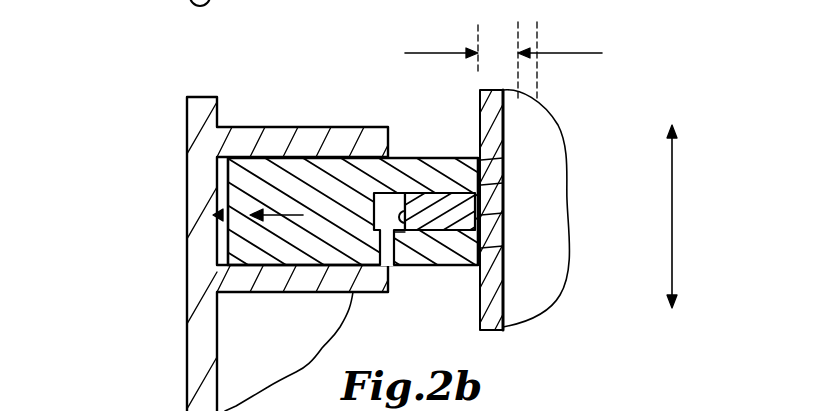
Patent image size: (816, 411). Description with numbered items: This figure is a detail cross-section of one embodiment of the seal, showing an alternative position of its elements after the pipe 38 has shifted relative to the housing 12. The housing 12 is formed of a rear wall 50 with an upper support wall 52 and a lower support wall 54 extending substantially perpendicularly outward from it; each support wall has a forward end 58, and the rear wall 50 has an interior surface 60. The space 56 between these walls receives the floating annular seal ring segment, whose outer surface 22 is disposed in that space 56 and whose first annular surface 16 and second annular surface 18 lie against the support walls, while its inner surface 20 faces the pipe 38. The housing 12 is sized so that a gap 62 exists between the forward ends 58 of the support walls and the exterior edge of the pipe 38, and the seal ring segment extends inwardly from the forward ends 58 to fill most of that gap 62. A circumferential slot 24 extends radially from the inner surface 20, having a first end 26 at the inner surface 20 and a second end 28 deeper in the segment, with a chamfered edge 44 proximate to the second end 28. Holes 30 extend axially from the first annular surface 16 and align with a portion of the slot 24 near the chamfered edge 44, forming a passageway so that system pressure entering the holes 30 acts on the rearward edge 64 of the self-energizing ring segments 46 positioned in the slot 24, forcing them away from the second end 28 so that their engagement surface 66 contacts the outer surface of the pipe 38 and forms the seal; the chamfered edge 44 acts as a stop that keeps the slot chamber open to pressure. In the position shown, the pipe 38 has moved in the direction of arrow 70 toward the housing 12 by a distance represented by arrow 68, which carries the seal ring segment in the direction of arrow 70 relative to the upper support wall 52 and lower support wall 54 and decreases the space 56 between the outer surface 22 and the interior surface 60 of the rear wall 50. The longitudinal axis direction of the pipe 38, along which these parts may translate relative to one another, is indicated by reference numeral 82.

The housing 12 is at (180, 295).
The first annular surface 16 is at (420, 268).
The second annular surface 18 is at (455, 158).
The inner surface 20 is at (483, 248).
The outer surface 22 is at (220, 182).
The circumferential slot 24 is at (392, 192).
The first end 26 is at (483, 186).
The second end 28 is at (357, 190).
The holes 30 is at (412, 268).
The pipe 38 is at (510, 268).
The chamfered edge 44 is at (394, 193).
The self-energizing ring segments 46 is at (503, 160).
The rear wall 50 is at (198, 194).
The upper support wall 52 is at (292, 130).
The lower support wall 54 is at (270, 282).
The space 56 is at (221, 162).
The forward end 58 is at (388, 150).
The interior surface 60 is at (222, 232).
The gap 62 is at (442, 134).
The rearward edge 64 is at (423, 267).
The engagement surface 66 is at (483, 215).
The arrow 68 is at (438, 53).
The arrow 70 is at (303, 216).
The reference numeral for longitudinal axis direction 82 is at (672, 208).